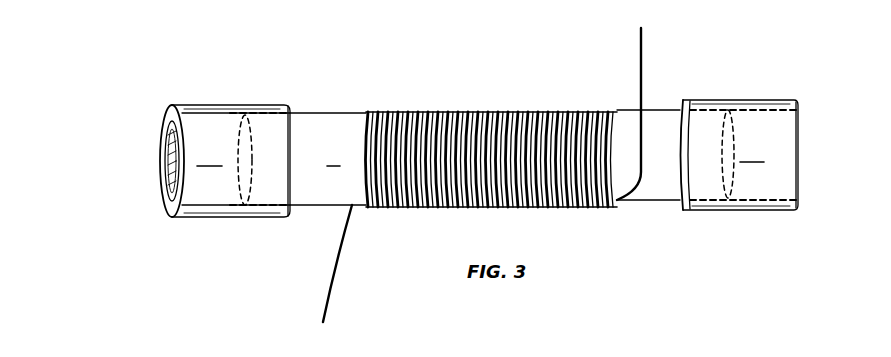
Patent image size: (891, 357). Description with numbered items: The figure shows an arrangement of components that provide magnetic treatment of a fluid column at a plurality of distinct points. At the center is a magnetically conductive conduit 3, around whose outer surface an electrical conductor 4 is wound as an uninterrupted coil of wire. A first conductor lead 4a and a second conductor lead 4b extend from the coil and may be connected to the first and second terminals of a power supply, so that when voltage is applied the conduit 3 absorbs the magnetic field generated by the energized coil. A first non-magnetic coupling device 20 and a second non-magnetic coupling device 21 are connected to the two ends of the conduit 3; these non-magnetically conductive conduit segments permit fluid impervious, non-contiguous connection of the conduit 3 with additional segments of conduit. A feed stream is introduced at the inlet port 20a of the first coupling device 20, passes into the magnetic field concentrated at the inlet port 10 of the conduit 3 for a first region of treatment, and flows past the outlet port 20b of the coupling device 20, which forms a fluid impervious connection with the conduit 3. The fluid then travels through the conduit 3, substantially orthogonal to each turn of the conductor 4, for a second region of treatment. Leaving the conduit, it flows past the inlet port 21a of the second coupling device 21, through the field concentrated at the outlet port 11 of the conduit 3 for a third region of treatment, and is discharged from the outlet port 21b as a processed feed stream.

The magnetically conductive conduit 3 is at (485, 157).
The electrical conductor 4 is at (508, 110).
The first conductor lead 4a is at (328, 303).
The second conductor lead 4b is at (640, 50).
The inlet port 10 is at (240, 140).
The outlet port 11 is at (728, 140).
The first non-magnetic coupling device 20 is at (231, 161).
The inlet port 20a is at (163, 128).
The outlet port 20b is at (285, 113).
The second non-magnetic coupling device 21 is at (740, 155).
The inlet port 21a is at (678, 107).
The outlet port 21b is at (798, 118).